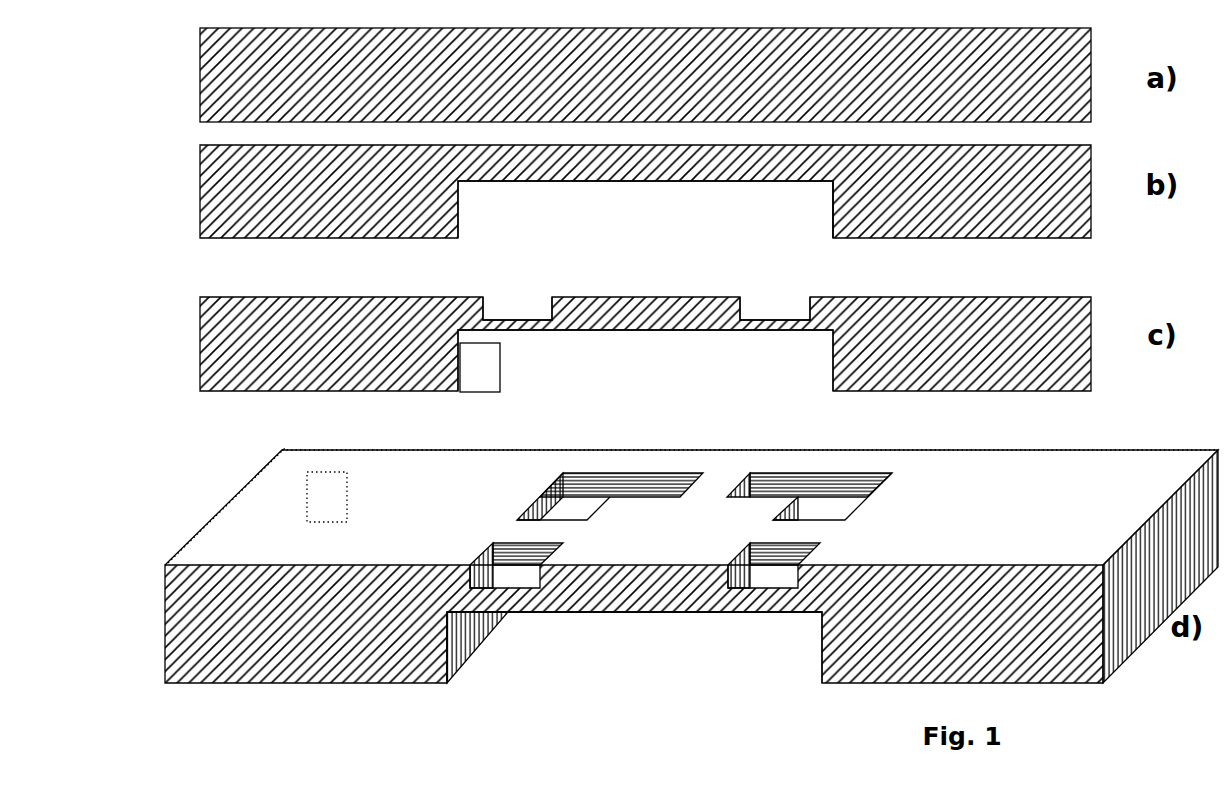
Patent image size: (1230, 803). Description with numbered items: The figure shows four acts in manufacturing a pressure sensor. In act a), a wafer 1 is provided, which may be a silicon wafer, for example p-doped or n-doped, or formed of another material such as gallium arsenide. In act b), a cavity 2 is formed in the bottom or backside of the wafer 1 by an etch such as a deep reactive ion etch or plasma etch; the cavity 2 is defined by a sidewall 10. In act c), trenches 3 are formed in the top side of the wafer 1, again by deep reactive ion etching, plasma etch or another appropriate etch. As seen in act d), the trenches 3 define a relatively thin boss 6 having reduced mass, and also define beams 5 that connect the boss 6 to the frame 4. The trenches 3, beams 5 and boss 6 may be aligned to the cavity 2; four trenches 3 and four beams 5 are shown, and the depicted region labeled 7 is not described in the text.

The wafer 1 is at (691, 355).
The cavity 2 is at (640, 432).
The trenches 3 is at (530, 305).
The frame 4 is at (327, 497).
The beams 5 is at (538, 527).
The boss 6 is at (658, 543).
The side wall 7 is at (505, 603).
The sidewall 10 is at (830, 216).